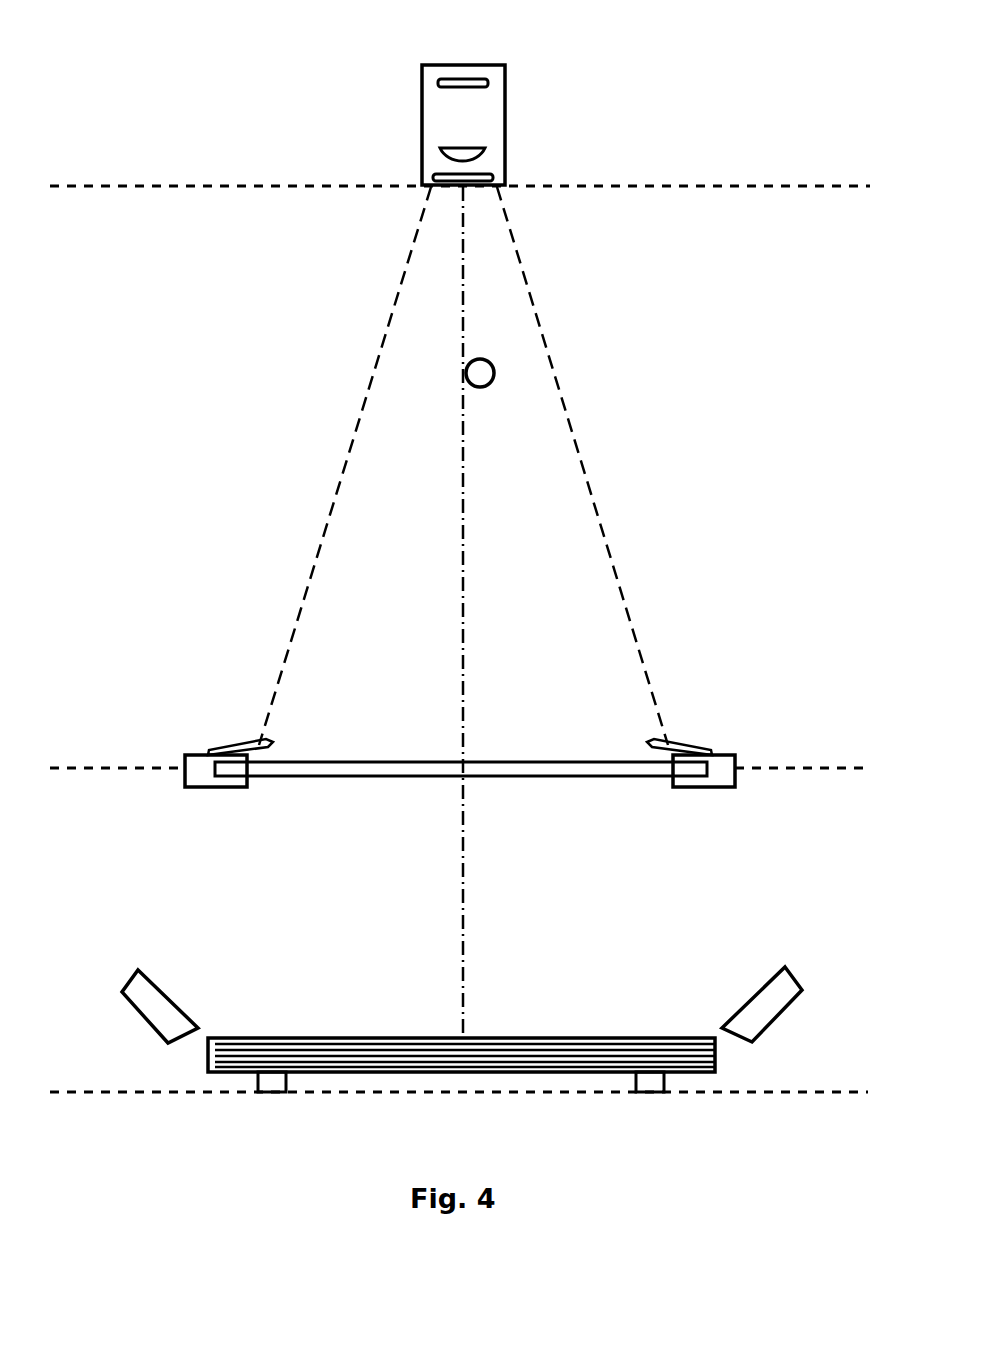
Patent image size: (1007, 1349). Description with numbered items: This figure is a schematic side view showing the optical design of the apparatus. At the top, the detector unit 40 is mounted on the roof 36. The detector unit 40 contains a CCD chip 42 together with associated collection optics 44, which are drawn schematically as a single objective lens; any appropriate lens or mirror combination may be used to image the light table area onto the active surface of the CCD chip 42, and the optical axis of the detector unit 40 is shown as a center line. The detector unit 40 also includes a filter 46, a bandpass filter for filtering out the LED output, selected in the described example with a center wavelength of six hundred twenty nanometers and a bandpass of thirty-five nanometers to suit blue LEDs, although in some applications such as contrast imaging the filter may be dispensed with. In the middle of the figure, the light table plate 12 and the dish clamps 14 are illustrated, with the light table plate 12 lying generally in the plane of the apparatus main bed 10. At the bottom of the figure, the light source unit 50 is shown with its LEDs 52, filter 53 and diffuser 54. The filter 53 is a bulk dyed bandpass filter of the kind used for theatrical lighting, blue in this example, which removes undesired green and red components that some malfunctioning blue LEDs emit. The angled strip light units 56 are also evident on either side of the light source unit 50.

The apparatus main bed 10 is at (775, 768).
The light table plate 12 is at (320, 762).
The dish clamps 14 is at (683, 745).
The roof 36 is at (727, 186).
The detector unit 40 is at (506, 115).
The CCD chip 42 is at (458, 80).
The collection optics 44 is at (440, 155).
The filter 46 is at (433, 176).
The light source unit 50 is at (481, 1094).
The LEDs 52 is at (690, 1062).
The filter 53 is at (240, 1055).
The diffuser 54 is at (255, 1048).
The angled strip light units 56 is at (800, 980).